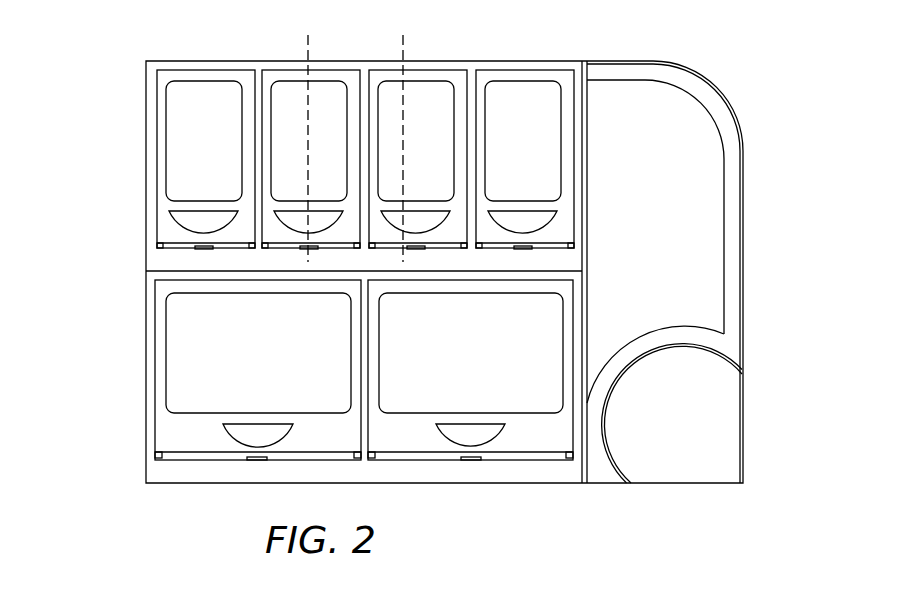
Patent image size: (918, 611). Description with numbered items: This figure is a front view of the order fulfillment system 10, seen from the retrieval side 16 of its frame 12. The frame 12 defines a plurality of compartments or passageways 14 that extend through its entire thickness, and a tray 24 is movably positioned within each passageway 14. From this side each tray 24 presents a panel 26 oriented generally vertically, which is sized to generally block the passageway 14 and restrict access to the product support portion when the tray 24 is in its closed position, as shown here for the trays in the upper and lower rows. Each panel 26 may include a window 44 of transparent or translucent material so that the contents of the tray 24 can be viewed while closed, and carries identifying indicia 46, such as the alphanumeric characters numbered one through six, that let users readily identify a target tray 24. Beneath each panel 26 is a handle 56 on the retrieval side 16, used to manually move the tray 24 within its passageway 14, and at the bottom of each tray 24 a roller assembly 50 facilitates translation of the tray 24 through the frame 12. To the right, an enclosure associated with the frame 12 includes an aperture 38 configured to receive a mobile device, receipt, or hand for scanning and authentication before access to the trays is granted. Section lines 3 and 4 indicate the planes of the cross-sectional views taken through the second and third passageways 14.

The order fulfillment system 10 is at (737, 60).
The frame 12 is at (152, 78).
The compartment or passageway 14 is at (183, 178).
The retrieval side 16 is at (157, 262).
The tray 24 is at (163, 208).
The panel 26 is at (178, 140).
The aperture 38 is at (703, 423).
The window 44 is at (229, 97).
The identifying indicia 46 is at (247, 328).
The roller assembly 50 is at (170, 245).
The handle 56 is at (247, 437).
The section line 3- 3 is at (312, 35).
The section line 4- 4 is at (407, 35).